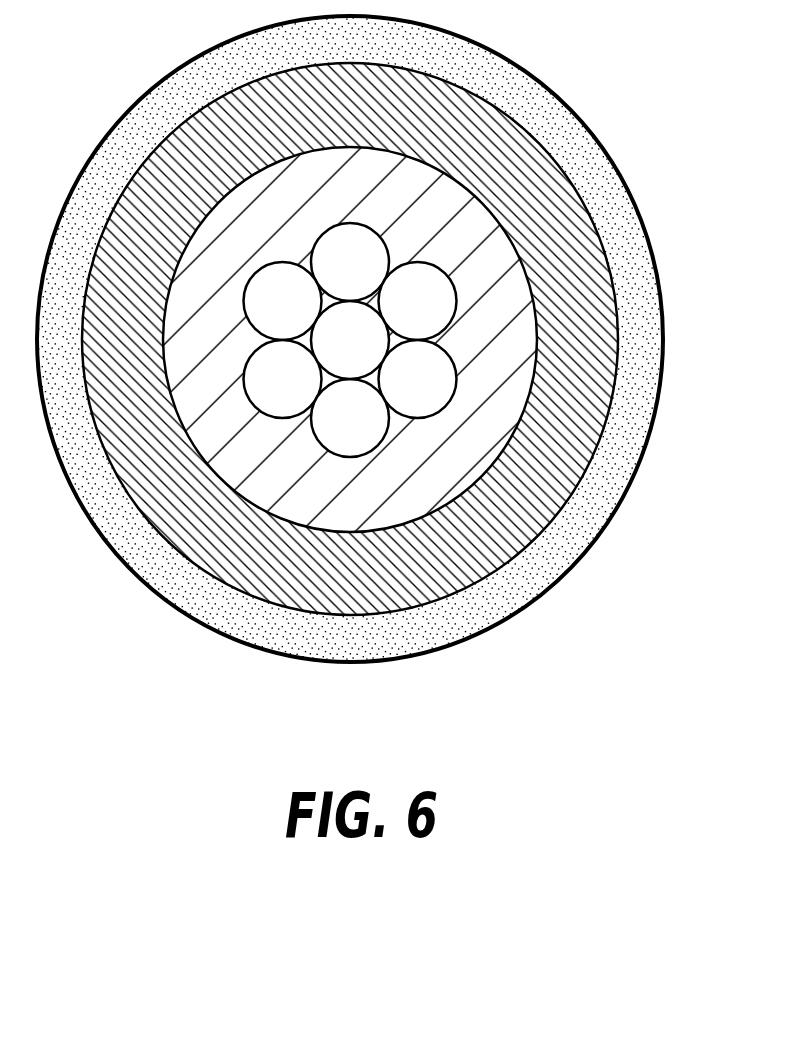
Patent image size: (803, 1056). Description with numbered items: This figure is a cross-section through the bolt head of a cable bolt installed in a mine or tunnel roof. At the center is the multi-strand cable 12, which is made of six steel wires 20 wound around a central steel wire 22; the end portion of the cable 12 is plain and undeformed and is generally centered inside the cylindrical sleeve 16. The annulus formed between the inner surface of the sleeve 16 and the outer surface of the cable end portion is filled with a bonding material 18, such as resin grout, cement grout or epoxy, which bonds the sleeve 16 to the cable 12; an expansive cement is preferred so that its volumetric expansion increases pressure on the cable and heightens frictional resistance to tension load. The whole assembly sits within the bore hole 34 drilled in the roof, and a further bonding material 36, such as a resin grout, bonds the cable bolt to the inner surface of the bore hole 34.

The multi-strand cable 12 is at (385, 339).
The cylindrical sleeve 16 is at (547, 200).
The bonding material 18 is at (503, 300).
The steel wires 20 is at (336, 275).
The central steel wire 22 is at (336, 353).
The bore hole 34 is at (530, 72).
The bonding material 36 is at (558, 127).